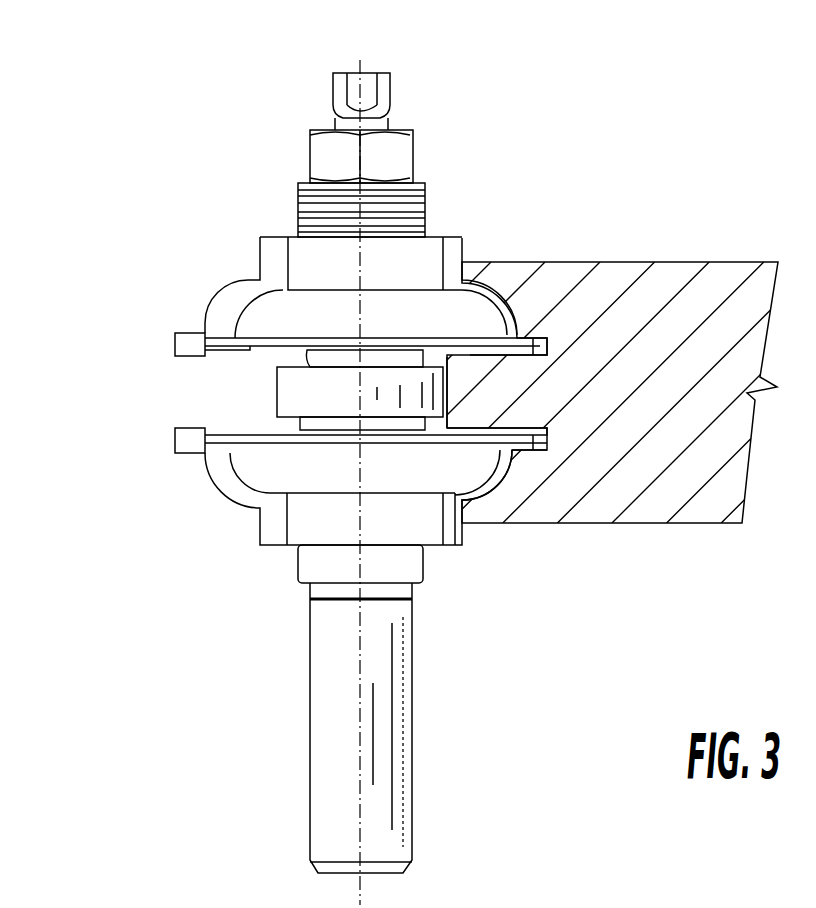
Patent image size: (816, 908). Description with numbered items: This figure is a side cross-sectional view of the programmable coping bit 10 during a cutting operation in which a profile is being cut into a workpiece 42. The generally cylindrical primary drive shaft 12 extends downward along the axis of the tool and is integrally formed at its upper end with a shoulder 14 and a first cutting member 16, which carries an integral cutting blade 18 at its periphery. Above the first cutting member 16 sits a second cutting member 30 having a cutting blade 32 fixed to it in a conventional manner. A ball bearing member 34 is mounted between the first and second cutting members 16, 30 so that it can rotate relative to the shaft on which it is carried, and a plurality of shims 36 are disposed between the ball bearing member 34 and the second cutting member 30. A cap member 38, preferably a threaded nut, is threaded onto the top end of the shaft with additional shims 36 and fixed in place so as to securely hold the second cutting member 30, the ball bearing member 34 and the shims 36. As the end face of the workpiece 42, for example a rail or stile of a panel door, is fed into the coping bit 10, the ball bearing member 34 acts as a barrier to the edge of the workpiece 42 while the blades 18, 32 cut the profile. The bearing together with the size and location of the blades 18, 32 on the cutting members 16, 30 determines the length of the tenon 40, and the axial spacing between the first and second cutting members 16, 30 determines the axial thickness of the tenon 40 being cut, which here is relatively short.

The programmable coping bit 10 is at (274, 457).
The primary drive shaft 12 is at (390, 729).
The shoulder 14 is at (413, 566).
The first cutting member 16 is at (302, 475).
The cutting blade 18 is at (193, 455).
The second cutting member 30 is at (415, 310).
The cutting blade 32 is at (175, 341).
The ball bearing member 34 is at (280, 397).
The shims 36 is at (425, 188).
The cap member 38 is at (323, 160).
The tenon 40 is at (508, 394).
The workpiece 42 is at (625, 282).